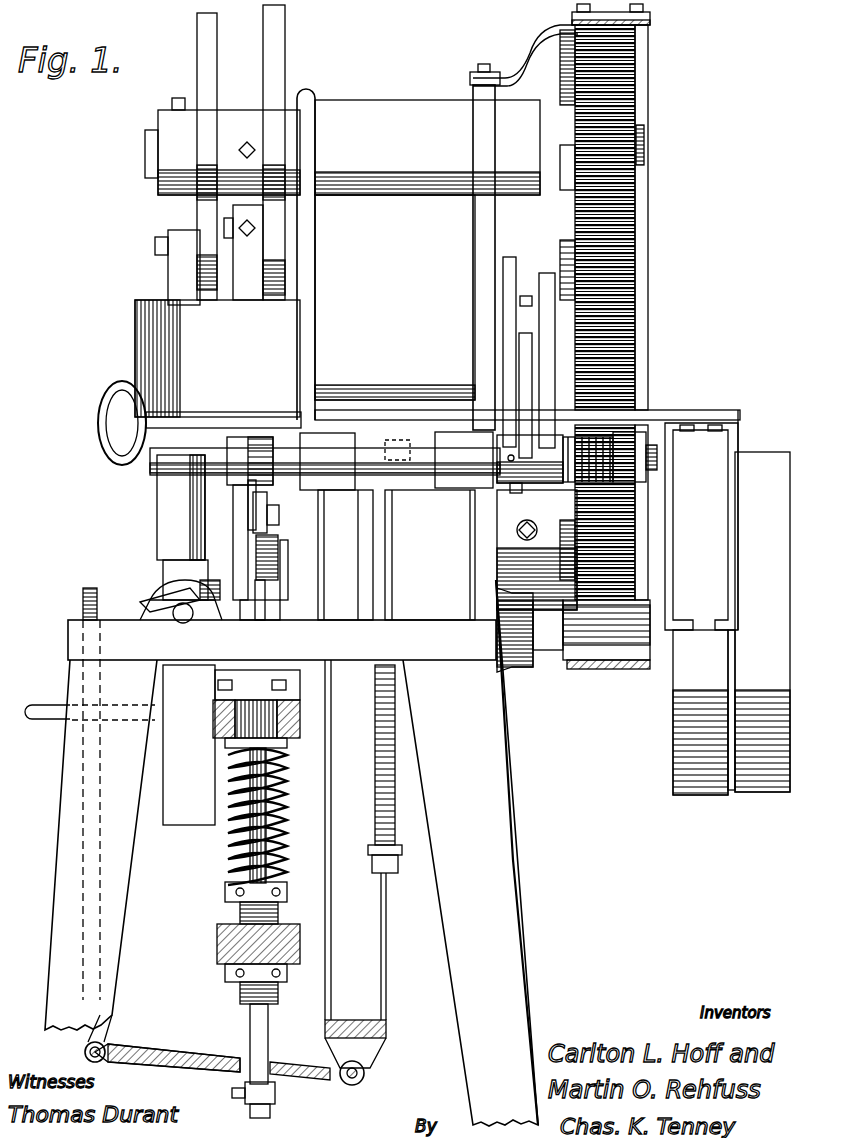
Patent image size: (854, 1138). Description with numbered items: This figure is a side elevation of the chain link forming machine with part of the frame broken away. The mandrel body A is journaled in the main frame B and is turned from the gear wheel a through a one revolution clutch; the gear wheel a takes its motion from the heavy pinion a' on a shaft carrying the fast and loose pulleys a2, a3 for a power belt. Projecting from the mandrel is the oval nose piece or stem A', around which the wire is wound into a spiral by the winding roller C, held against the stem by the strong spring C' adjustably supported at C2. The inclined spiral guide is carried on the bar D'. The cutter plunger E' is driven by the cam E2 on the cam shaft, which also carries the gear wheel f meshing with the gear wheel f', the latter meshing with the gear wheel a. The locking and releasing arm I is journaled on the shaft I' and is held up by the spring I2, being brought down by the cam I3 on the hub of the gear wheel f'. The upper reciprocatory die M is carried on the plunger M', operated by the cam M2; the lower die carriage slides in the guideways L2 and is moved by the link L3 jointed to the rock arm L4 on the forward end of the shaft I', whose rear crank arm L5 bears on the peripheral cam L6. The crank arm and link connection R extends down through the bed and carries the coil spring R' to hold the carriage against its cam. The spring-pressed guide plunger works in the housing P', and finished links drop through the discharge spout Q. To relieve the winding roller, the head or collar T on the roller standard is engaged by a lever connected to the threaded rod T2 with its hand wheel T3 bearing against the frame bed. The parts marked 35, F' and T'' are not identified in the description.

The cam M2 is at (196, 22).
The cam E2 is at (286, 30).
The pin 35 is at (232, 145).
The cylinder F' is at (197, 146).
The plunger E' is at (217, 311).
The peripheral cam L6 is at (513, 334).
The cam I3 is at (545, 280).
The crank arm L5 is at (525, 378).
The locking and releasing arm I is at (381, 462).
The shaft I' is at (688, 447).
The rock arm L4 is at (235, 490).
The plunger M' is at (156, 507).
The reciprocatory die M is at (163, 576).
The nose piece or stem A' is at (232, 507).
The bar D' is at (307, 536).
The mandrel body A is at (331, 555).
The main frame B is at (430, 555).
The winding roller C is at (318, 595).
The crank arm and link connection R is at (372, 789).
The spring I2 is at (575, 470).
The gear wheel f is at (619, 207).
The gear wheel f' is at (621, 279).
The gear wheel a is at (632, 512).
The pinion a' is at (573, 644).
The fast pulley a2 is at (675, 745).
The loose pulley a3 is at (760, 795).
The discharge spout Q is at (189, 745).
The threaded rod T2 is at (82, 600).
The hand wheel T3 is at (34, 722).
The housing P' is at (181, 620).
The guideways L2 is at (172, 620).
The link L3 is at (252, 598).
The spring C' is at (266, 797).
The adjustable support C2 is at (217, 937).
The head or collar T is at (273, 1061).
The link T'' is at (207, 1056).
The coil spring R' is at (363, 875).